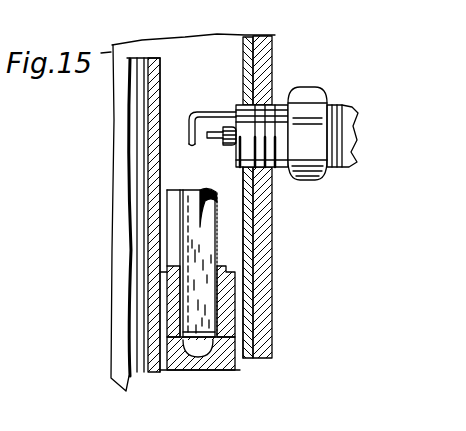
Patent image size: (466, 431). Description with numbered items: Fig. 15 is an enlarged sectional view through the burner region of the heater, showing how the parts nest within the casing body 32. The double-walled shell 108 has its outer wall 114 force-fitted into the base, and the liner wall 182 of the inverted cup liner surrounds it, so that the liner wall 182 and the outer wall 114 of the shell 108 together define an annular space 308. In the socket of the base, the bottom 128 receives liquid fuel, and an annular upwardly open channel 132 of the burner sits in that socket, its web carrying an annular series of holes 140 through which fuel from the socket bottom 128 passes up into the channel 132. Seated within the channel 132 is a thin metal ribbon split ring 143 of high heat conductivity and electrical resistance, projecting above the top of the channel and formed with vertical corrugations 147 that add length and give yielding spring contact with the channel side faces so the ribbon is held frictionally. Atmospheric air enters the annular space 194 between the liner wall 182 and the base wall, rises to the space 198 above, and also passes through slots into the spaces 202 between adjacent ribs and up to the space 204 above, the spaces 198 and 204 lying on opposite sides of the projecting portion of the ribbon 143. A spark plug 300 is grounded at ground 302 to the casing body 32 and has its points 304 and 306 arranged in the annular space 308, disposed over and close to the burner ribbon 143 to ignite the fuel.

The casing body 32 is at (278, 265).
The double-walled shell 108 is at (164, 69).
The outer wall 114 is at (161, 95).
The bottom 128 is at (240, 340).
The channel 132 is at (237, 317).
The holes 140 is at (200, 357).
The split ring 143 is at (198, 186).
The corrugations 147 is at (170, 219).
The liner wall 182 is at (243, 79).
The annular space 194 is at (235, 302).
The space 198 is at (230, 239).
The spaces 202 is at (159, 304).
The space 204 is at (171, 235).
The spark plug 300 is at (343, 101).
The ground 302 is at (268, 178).
The point 304 is at (190, 147).
The point 306 is at (207, 141).
The annular space 308 is at (227, 52).